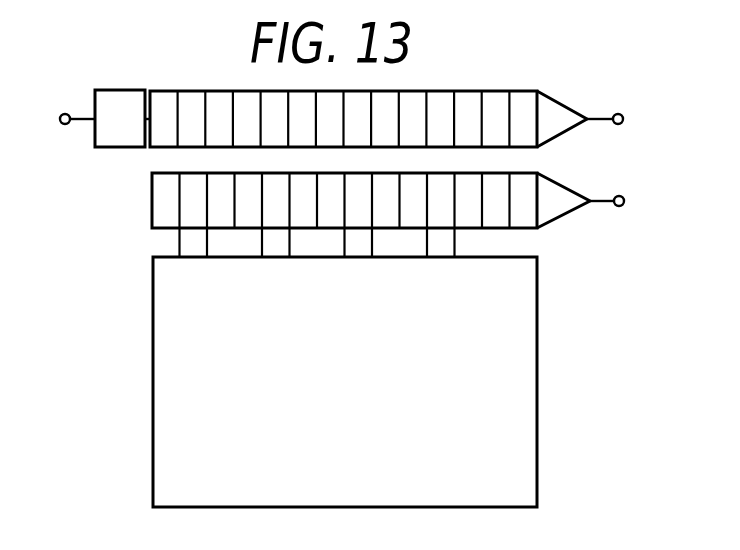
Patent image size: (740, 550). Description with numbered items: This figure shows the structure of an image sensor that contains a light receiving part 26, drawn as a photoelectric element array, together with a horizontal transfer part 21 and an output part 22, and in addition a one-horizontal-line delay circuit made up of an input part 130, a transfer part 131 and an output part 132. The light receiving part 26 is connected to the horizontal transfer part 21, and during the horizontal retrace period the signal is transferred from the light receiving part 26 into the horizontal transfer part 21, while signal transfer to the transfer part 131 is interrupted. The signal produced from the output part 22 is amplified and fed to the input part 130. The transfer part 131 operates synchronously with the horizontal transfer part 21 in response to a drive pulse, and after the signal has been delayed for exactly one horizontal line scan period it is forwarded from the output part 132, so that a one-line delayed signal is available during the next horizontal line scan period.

The input part 130 is at (128, 90).
The transfer part 131 is at (493, 91).
The output part 132 is at (563, 102).
The horizontal transfer part 21 is at (152, 194).
The output part 22 is at (565, 185).
The light receiving part 26 is at (537, 287).